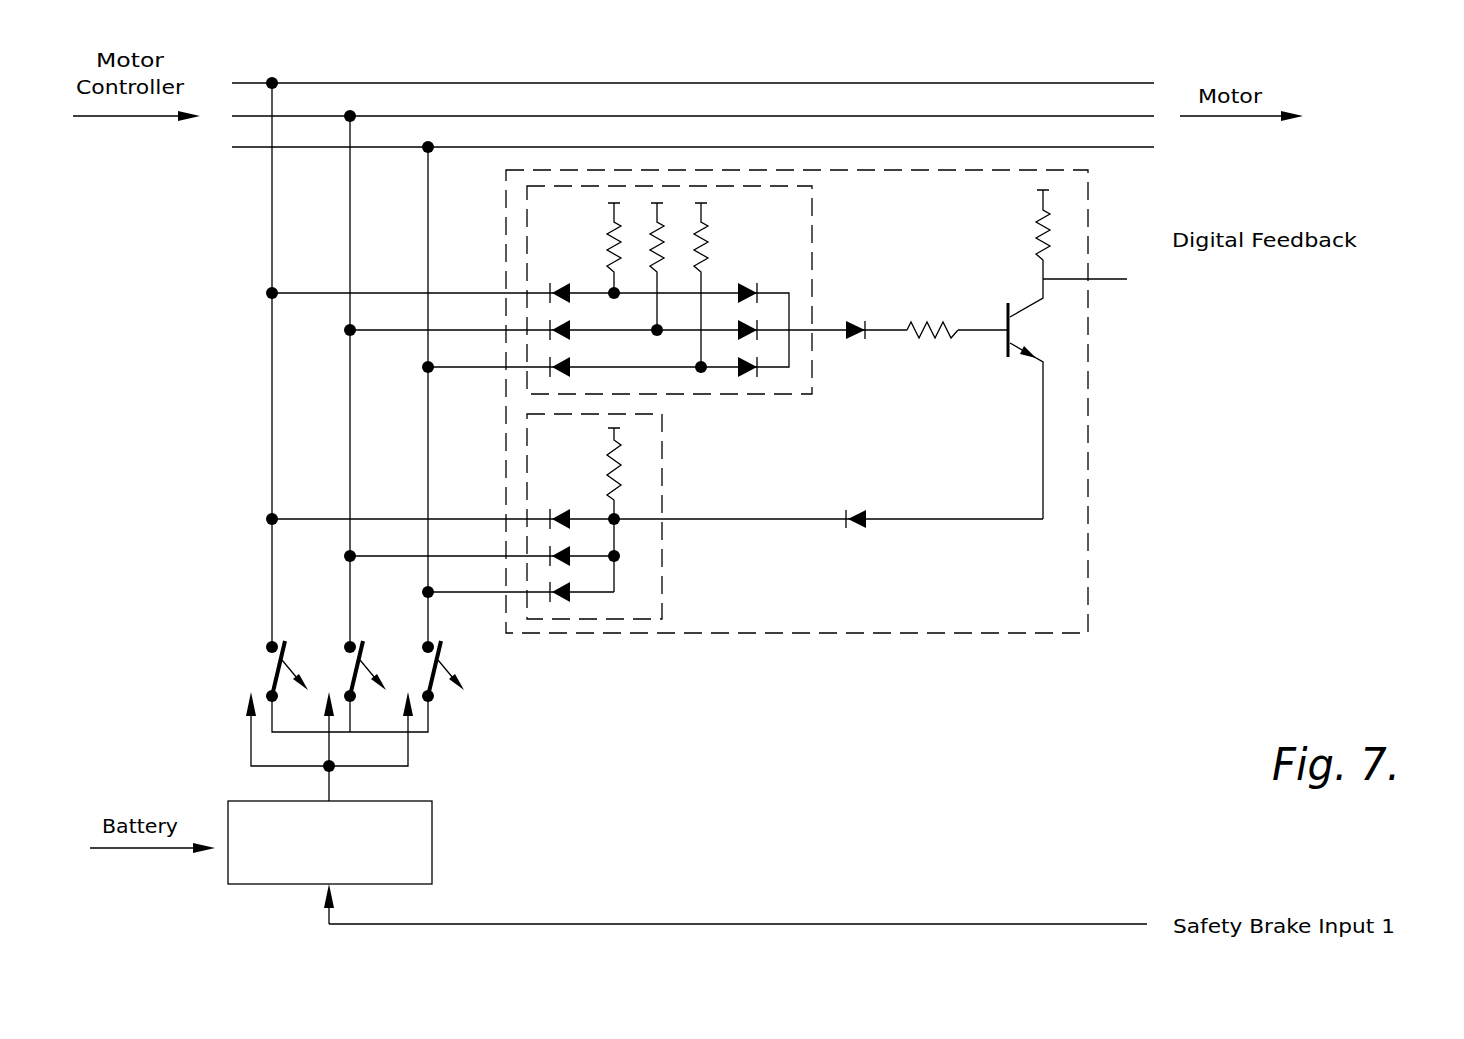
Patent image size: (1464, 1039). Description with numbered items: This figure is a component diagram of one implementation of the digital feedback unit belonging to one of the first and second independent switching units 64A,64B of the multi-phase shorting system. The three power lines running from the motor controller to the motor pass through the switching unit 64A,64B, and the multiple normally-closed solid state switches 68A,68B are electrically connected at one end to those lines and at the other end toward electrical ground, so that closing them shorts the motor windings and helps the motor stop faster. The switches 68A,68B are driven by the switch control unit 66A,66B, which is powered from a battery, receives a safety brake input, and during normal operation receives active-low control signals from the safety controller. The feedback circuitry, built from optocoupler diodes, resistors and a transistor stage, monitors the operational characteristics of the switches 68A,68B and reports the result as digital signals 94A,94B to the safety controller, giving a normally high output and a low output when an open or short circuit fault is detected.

The first and second independent switching units 64A,64B is at (643, 70).
The digital signals 94A,94B is at (1290, 212).
The normally-closed solid state switches 68A,68B is at (495, 690).
The switch control unit 66A,66B is at (448, 816).